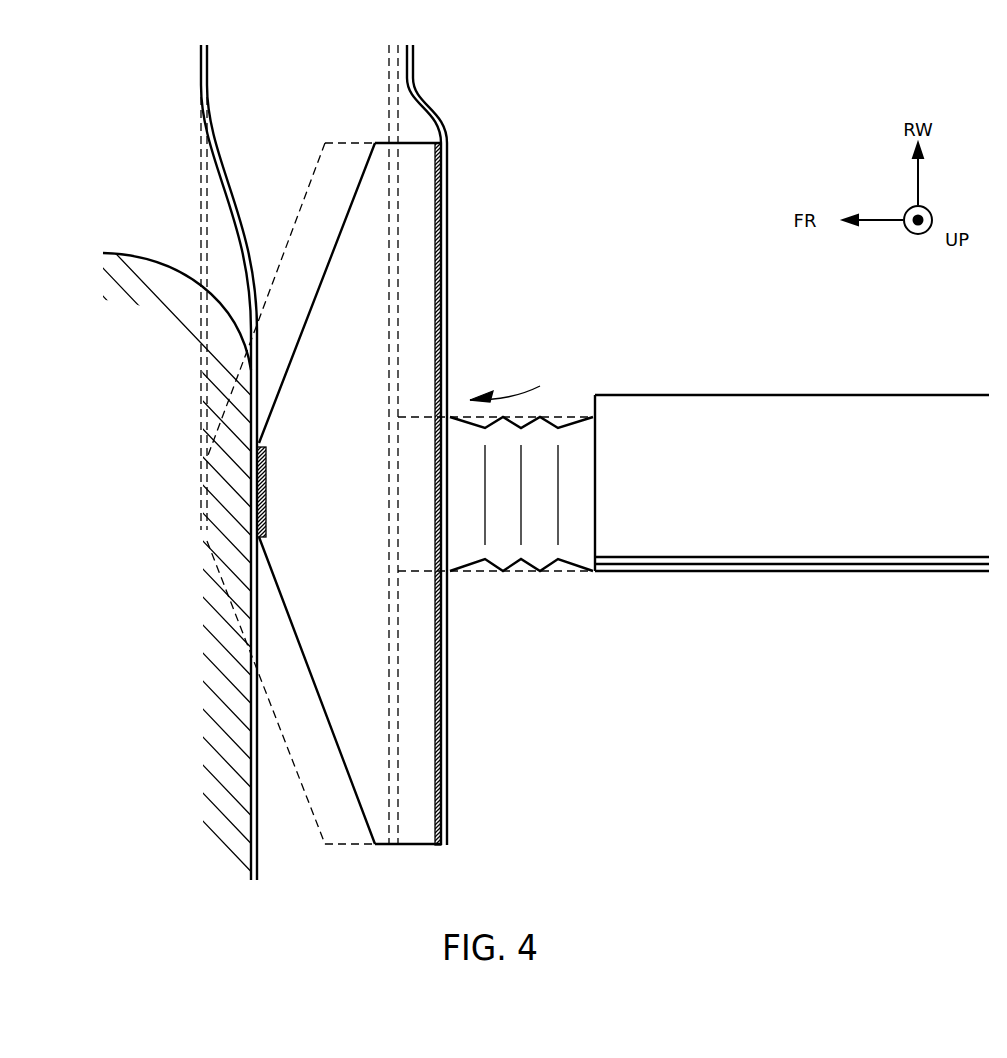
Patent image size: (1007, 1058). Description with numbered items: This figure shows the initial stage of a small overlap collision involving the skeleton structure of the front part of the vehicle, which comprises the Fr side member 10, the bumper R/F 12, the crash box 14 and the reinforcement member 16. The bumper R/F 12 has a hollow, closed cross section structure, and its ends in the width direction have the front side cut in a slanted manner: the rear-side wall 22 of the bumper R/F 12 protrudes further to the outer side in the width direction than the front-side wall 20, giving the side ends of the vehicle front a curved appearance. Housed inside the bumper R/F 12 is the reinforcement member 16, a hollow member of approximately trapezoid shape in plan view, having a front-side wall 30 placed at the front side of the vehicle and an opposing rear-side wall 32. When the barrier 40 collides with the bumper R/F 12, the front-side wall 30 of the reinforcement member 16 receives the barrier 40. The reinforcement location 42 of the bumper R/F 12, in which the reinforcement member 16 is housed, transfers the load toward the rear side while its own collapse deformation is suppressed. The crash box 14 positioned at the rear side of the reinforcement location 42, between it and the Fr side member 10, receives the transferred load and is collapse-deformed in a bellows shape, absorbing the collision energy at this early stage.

The Fr side member 10 is at (790, 395).
The bumper R/F 12 is at (236, 226).
The crash box 14 is at (567, 565).
The reinforcement member 16 is at (347, 210).
The front-side wall 20 is at (168, 462).
The rear-side wall 22 is at (432, 92).
The front-side wall 30 is at (265, 493).
The rear-side wall 32 is at (438, 328).
The barrier 40 is at (165, 255).
The reinforcement location 42 is at (540, 386).